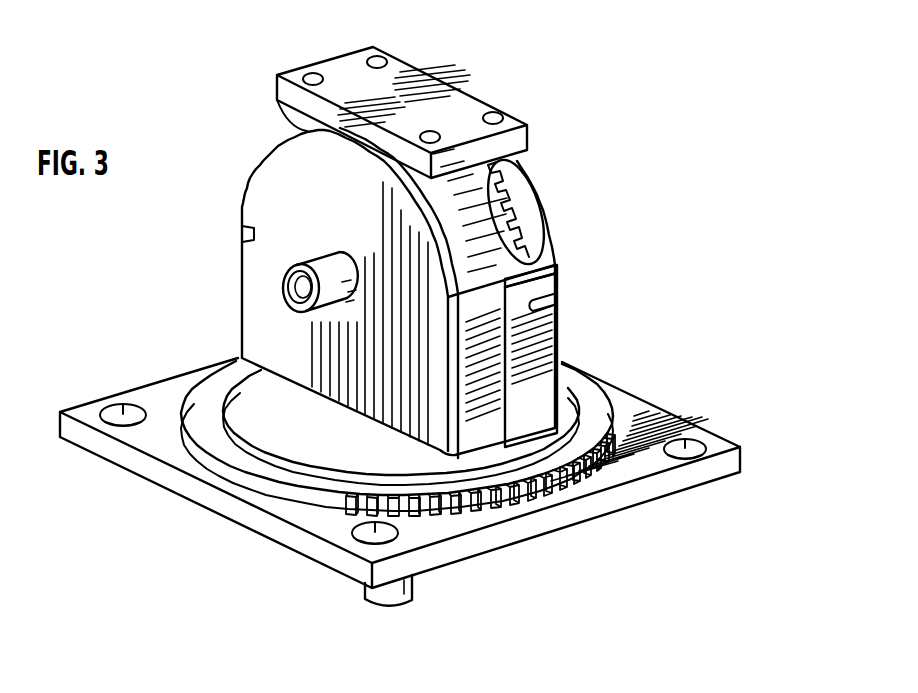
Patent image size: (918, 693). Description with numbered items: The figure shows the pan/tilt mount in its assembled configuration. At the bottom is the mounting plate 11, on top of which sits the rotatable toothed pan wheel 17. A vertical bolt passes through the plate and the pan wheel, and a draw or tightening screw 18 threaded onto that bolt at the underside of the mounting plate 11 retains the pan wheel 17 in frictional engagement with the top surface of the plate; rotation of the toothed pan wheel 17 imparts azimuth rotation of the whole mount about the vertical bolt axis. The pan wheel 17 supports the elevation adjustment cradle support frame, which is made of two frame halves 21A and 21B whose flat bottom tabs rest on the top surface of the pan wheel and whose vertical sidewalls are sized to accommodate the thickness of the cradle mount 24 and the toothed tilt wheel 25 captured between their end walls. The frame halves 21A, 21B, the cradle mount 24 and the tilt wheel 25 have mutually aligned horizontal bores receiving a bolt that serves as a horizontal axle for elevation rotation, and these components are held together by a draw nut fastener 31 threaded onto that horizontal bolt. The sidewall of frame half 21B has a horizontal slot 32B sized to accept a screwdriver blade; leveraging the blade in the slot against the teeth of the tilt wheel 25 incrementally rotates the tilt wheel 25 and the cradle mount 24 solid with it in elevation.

The mounting plate 11 is at (685, 399).
The toothed pan wheel 17 is at (603, 368).
The tightening screw 18 is at (418, 594).
The frame half 21A is at (241, 305).
The frame half 21B is at (560, 343).
The cradle mount 24 is at (447, 84).
The toothed tilt wheel 25 is at (554, 175).
The draw nut fastener 31 is at (290, 238).
The horizontal slot 32B is at (580, 283).